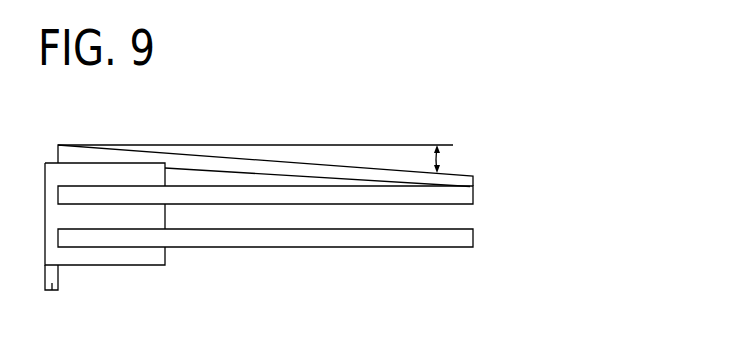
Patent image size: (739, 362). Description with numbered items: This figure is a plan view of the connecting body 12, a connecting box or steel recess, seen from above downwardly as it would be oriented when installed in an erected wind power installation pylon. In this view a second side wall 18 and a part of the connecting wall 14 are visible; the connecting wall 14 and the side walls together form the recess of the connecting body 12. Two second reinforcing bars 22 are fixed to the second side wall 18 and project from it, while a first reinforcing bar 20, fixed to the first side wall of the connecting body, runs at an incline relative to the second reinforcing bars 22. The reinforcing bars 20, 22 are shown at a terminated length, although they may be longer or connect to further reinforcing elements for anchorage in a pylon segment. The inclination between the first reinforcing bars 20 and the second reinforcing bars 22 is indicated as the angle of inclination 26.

The connecting body 12 is at (266, 286).
The connecting wall 14 is at (52, 290).
The second side wall 18 is at (150, 258).
The first reinforcing bars 20 is at (222, 158).
The second reinforcing bars 22 is at (380, 197).
The angle of inclination 26 is at (367, 155).